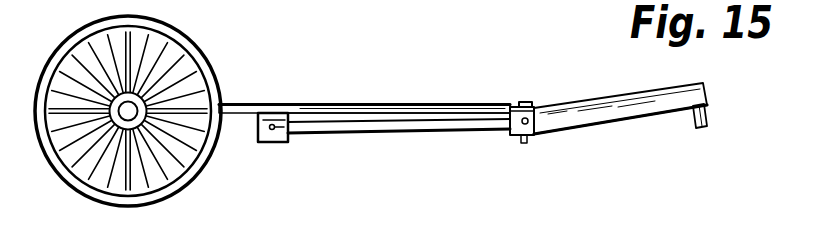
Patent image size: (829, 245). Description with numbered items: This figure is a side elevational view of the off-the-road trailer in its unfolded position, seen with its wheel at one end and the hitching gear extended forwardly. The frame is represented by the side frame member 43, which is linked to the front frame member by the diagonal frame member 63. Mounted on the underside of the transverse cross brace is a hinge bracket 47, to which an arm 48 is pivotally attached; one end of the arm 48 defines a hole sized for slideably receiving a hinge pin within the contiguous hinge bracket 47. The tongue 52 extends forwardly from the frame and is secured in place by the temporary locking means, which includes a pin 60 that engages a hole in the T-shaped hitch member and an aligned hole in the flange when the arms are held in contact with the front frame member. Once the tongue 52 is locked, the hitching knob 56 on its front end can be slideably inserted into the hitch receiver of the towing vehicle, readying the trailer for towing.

The side frame member 43 is at (318, 103).
The hinge bracket 47 is at (260, 143).
The arm 48 is at (368, 133).
The tongue 52 is at (603, 115).
The hitching knob 56 is at (705, 128).
The pin 60 is at (524, 101).
The diagonal frame member 63 is at (452, 102).